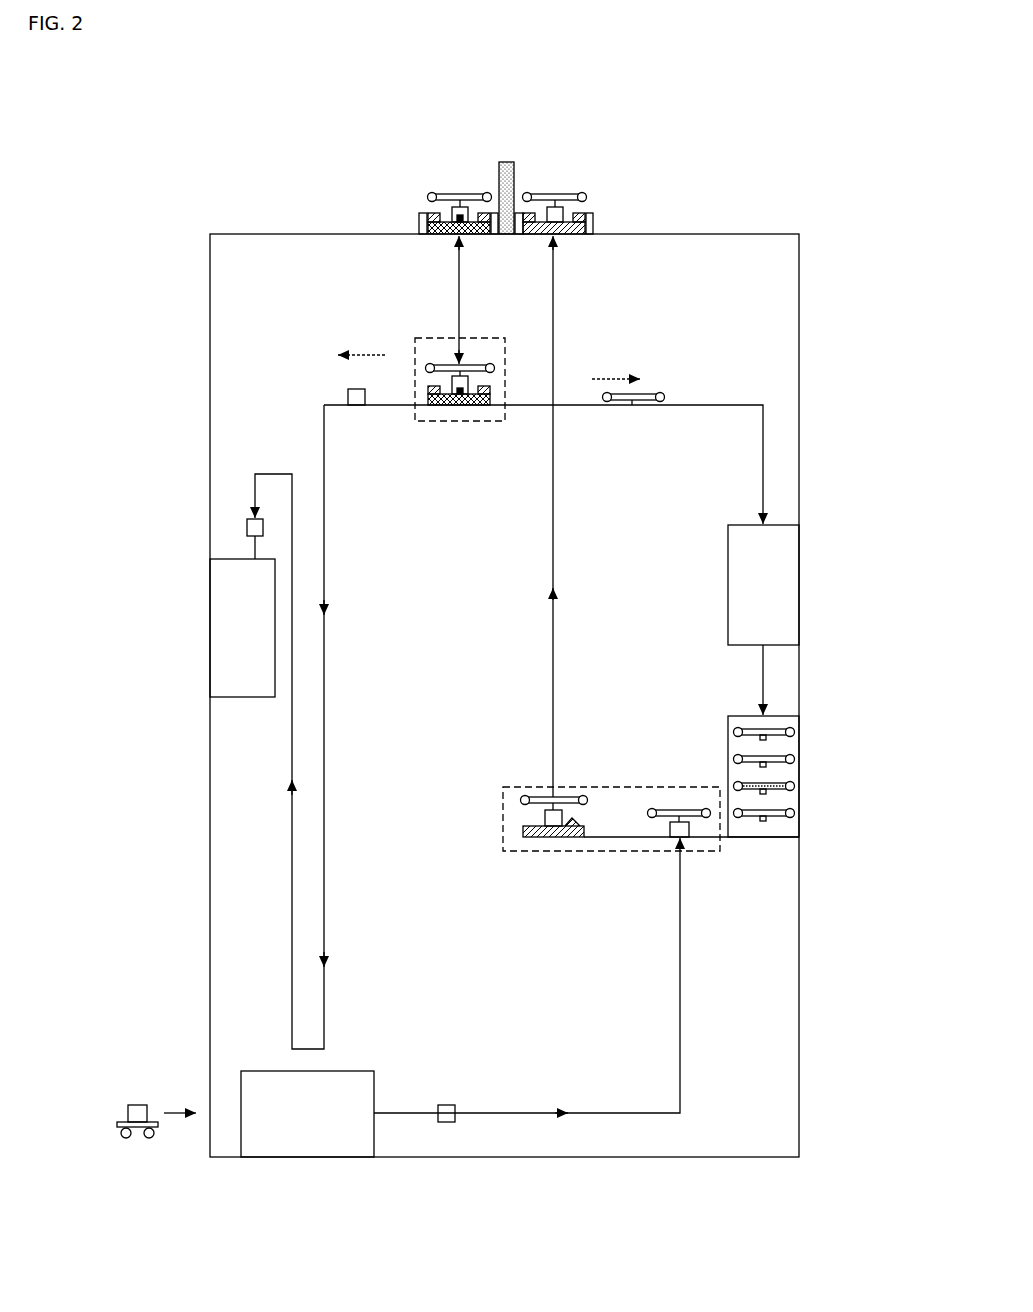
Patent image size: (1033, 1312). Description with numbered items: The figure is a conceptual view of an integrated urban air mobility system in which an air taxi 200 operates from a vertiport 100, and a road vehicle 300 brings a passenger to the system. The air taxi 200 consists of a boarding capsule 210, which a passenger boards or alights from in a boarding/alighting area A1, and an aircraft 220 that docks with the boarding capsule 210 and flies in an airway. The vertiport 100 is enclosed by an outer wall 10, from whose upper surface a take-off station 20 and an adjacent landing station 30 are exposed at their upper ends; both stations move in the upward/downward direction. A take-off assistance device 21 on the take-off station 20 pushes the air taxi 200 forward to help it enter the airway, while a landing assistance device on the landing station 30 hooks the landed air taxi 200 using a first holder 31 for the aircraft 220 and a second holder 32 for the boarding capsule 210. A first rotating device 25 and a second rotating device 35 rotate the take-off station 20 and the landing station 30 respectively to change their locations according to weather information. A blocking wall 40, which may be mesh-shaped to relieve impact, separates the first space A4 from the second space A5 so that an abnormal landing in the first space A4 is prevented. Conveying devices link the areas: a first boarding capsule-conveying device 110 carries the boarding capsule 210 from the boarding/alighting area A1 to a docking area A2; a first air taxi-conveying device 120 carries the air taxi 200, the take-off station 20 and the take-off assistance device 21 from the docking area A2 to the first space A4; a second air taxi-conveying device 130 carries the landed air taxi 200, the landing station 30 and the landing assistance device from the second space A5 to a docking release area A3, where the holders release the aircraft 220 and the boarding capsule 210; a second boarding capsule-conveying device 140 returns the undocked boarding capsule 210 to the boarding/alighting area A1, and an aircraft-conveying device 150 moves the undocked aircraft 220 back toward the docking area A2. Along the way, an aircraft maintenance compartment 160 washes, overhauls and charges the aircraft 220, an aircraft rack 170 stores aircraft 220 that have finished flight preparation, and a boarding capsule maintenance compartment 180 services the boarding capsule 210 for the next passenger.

The outer wall 10 is at (210, 322).
The vertiport 100 is at (236, 196).
The take-off station 20 is at (572, 235).
The take-off assistance device 21 is at (578, 840).
The first rotating device 25 is at (583, 217).
The landing station 30 is at (436, 235).
The first holder 31 is at (459, 196).
The second holder 32 is at (470, 235).
The second rotating device 35 is at (428, 216).
The blocking wall 40 is at (507, 162).
The first boarding capsule-conveying device 110 is at (602, 1113).
The first air taxi-conveying device 120 is at (553, 510).
The second air taxi-conveying device 130 is at (459, 300).
The second boarding capsule-conveying device 140 is at (324, 538).
The aircraft-conveying device 150 is at (722, 405).
The aircraft maintenance compartment 160 is at (782, 577).
The aircraft rack 170 is at (793, 745).
The boarding capsule maintenance compartment 180 is at (210, 615).
The air taxi 200 is at (426, 186).
The boarding capsule 210 is at (355, 389).
The aircraft 220 is at (648, 394).
The road vehicle 300 is at (117, 1124).
The boarding/alighting area A1 is at (302, 1158).
The docking area A2 is at (520, 786).
The docking release area A3 is at (440, 421).
The first space A4 is at (544, 216).
The second space A5 is at (472, 216).